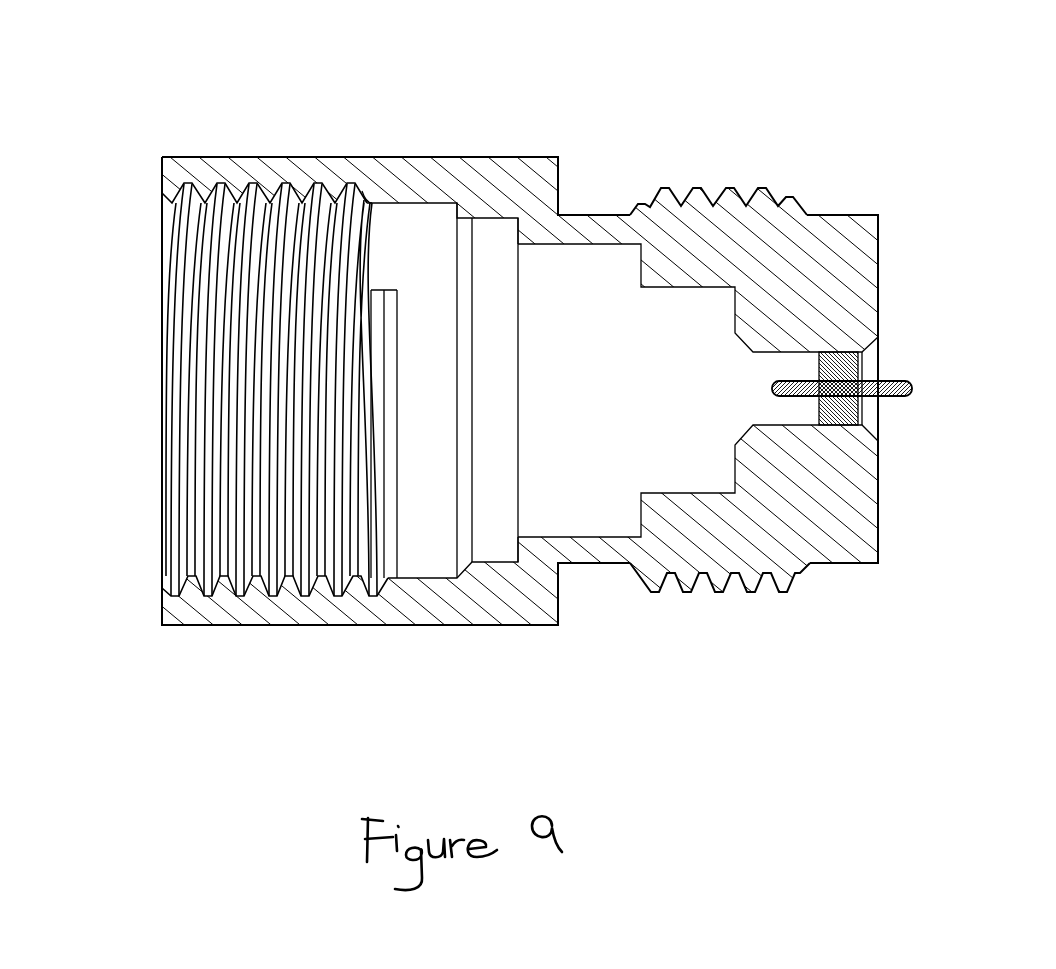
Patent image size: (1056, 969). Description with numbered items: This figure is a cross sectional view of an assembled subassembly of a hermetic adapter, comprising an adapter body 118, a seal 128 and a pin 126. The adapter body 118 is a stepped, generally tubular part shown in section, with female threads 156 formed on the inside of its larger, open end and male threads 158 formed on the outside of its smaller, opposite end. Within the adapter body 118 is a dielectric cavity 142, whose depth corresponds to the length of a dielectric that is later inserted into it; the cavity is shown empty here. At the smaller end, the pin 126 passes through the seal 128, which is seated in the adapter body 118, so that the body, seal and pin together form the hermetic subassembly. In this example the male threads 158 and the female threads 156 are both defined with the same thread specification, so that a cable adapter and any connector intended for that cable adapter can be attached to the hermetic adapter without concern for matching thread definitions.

The adapter body 118 is at (495, 605).
The pin 126 is at (912, 397).
The seal 128 is at (847, 368).
The dielectric cavity 142 is at (667, 473).
The female threads 156 is at (258, 250).
The male threads 158 is at (712, 185).